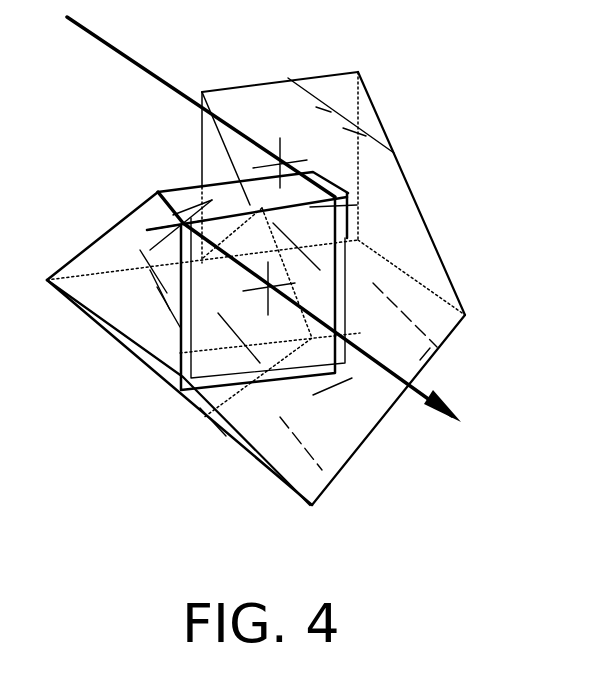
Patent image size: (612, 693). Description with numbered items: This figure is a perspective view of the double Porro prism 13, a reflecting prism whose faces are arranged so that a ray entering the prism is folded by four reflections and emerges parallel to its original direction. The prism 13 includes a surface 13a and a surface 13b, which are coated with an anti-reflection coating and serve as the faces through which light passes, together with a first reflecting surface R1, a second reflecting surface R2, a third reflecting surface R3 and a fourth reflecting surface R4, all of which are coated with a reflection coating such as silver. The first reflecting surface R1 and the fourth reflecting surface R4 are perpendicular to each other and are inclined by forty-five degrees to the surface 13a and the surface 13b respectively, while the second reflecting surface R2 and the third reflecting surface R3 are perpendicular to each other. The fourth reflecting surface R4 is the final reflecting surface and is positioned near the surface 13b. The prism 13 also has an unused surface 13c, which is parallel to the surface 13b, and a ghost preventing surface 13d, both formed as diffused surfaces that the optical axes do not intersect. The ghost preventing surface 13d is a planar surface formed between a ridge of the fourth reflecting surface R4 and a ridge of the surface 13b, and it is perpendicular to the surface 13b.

The double Porro prism 13 is at (428, 84).
The surface 13a is at (297, 80).
The surface 13b is at (200, 310).
The unused surface 13c is at (420, 358).
The ghost preventing surface 13d is at (192, 206).
The first reflecting surface R1 is at (404, 213).
The second reflecting surface R2 is at (347, 430).
The third reflecting surface R3 is at (213, 427).
The fourth reflecting surface R4 is at (125, 247).